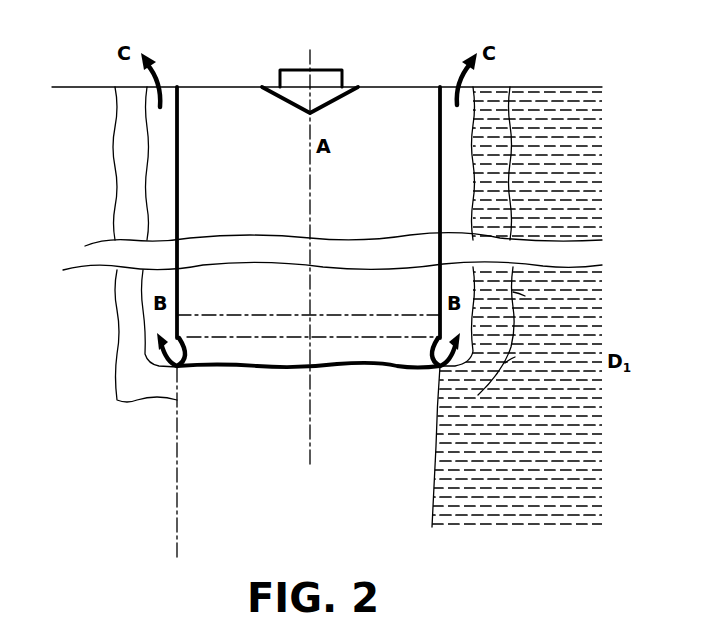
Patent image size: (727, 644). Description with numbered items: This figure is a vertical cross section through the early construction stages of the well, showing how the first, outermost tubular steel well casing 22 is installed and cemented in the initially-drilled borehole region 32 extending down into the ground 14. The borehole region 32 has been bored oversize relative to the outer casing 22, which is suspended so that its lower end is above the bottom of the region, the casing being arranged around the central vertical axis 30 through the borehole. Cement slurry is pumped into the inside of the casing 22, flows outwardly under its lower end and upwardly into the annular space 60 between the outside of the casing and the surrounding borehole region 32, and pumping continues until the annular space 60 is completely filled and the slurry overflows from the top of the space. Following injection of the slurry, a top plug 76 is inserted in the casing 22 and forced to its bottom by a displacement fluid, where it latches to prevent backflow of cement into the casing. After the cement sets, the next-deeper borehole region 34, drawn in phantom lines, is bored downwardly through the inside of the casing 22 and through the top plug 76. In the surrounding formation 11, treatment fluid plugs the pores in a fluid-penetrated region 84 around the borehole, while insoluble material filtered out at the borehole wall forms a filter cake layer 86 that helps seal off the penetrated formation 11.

The formation 11 is at (517, 307).
The ground 14 is at (526, 84).
The outer tubular steel well casing 22 is at (177, 216).
The central vertical axis 30 is at (311, 421).
The initially-drilled borehole region 32 is at (147, 173).
The next-lower borehole region 34 is at (437, 479).
The annular space 60 is at (163, 130).
The top plug 76 is at (246, 339).
The fluid-penetrated region 84 is at (515, 357).
The filter cake layer 86 is at (525, 296).